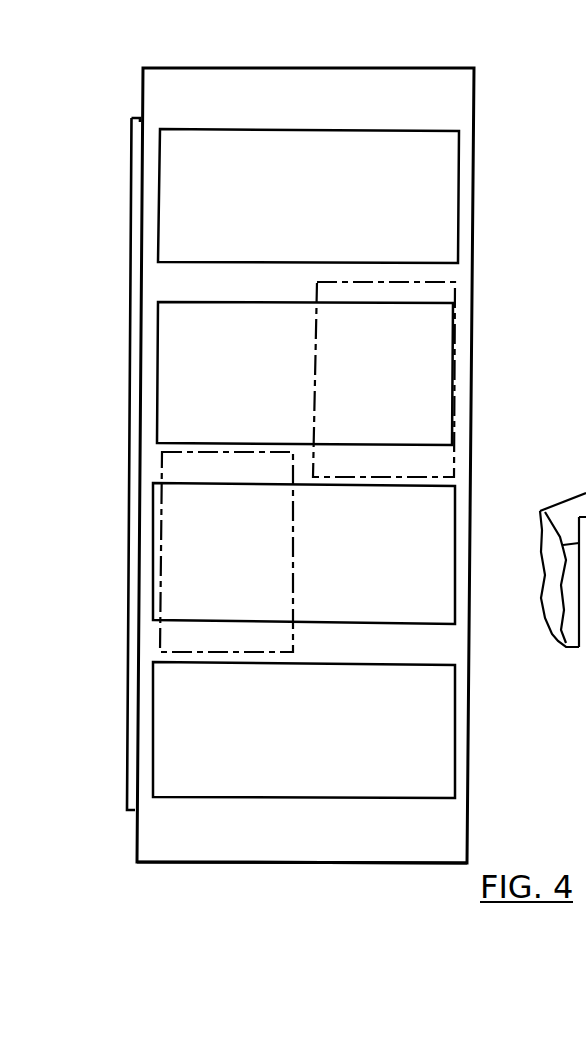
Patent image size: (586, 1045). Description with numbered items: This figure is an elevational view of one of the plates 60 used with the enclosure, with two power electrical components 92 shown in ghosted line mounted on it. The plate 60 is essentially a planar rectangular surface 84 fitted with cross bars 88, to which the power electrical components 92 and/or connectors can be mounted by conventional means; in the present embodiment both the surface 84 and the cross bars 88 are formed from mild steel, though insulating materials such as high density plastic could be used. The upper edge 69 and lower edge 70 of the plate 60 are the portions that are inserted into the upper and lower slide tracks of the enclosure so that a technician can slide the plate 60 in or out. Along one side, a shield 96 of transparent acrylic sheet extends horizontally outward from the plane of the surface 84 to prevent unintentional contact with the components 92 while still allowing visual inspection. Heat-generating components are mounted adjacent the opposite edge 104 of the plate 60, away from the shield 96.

The plate 60 is at (290, 482).
The upper edge 69 is at (452, 68).
The lower edge 70 is at (402, 863).
The planar rectangular surface 84 is at (465, 162).
The cross bars 88 is at (205, 284).
The power electrical components 92 is at (455, 291).
The shield 96 is at (133, 157).
The edge 104 is at (470, 738).